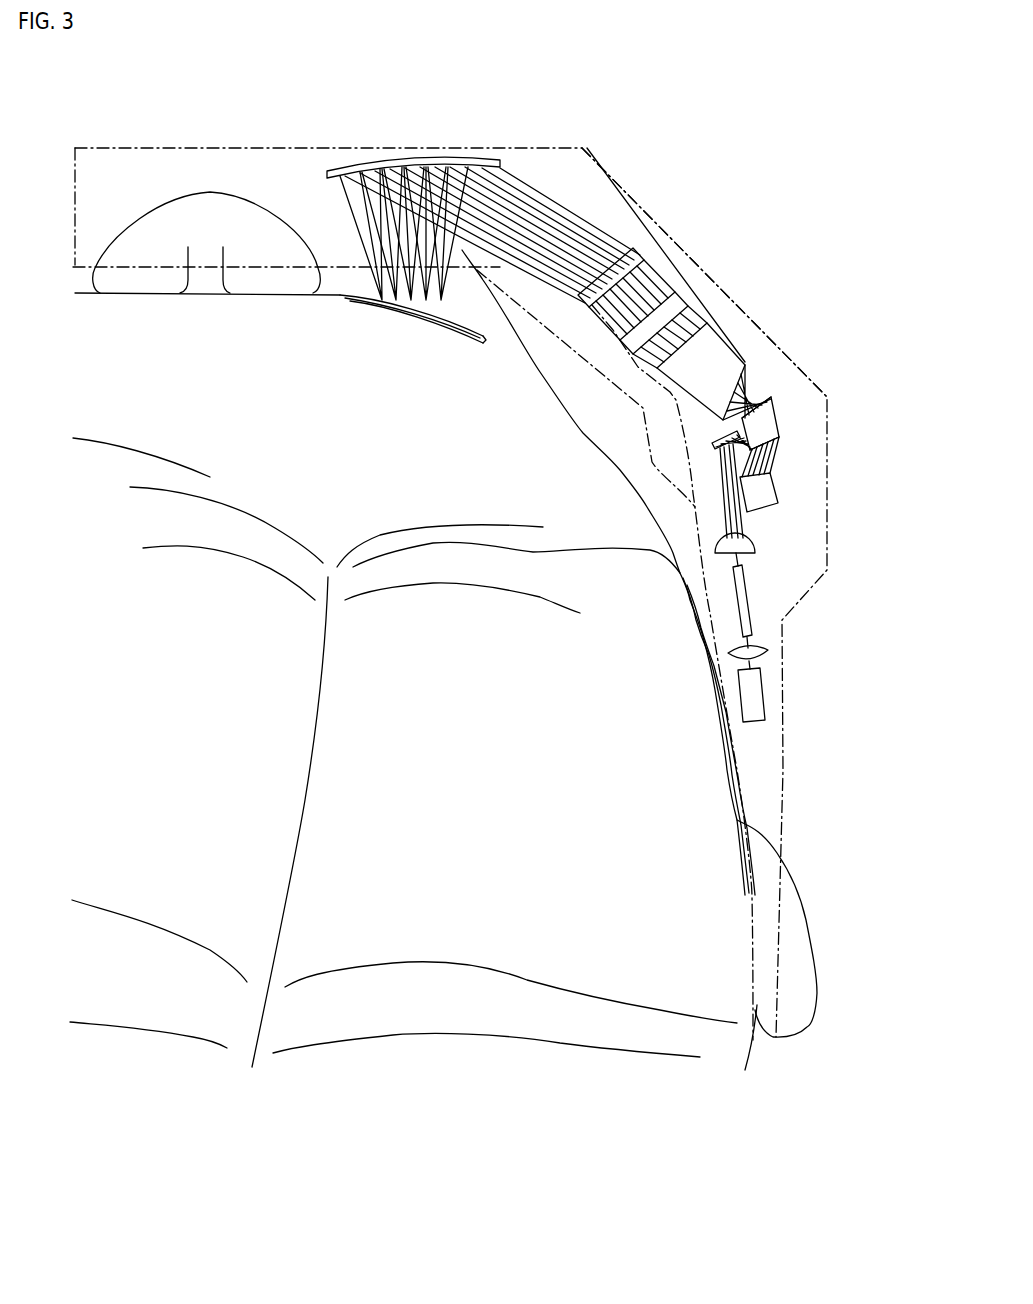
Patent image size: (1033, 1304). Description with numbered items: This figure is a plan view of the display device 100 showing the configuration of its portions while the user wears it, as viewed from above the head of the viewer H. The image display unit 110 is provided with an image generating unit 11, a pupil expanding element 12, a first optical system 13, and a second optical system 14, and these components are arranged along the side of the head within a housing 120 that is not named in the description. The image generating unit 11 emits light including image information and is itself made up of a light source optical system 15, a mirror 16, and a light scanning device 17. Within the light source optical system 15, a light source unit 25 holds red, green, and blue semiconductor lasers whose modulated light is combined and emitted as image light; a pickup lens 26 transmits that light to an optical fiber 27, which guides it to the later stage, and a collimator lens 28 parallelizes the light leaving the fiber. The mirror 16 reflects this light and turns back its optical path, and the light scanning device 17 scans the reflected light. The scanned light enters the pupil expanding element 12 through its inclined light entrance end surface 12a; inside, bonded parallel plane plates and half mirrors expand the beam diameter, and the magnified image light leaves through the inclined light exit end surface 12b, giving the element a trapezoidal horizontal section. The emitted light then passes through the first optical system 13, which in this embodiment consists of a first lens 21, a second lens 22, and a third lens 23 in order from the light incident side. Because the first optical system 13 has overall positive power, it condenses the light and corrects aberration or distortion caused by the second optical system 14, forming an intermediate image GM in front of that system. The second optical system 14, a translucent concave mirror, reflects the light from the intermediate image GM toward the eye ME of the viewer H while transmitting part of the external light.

The display device 100 is at (528, 97).
The image display unit 110 is at (696, 203).
The housing 120 is at (200, 147).
The second optical system 14 is at (403, 158).
The first optical system 13 is at (765, 153).
The third lens 23 is at (643, 262).
The second lens 22 is at (686, 300).
The first lens 21 is at (717, 338).
The pupil expanding element 12 is at (767, 412).
The light entrance end surface 12a is at (773, 447).
The light exit end surface 12b is at (773, 390).
The mirror 16 is at (716, 437).
The light scanning device 17 is at (767, 495).
The collimator lens 28 is at (720, 541).
The optical fiber 27 is at (752, 615).
The pickup lens 26 is at (757, 653).
The light source unit 25 is at (757, 702).
The image generating unit 11 is at (683, 600).
The light source optical system 15 is at (698, 677).
The intermediate image GM is at (535, 186).
The eye ME is at (422, 307).
The viewer H is at (500, 1008).